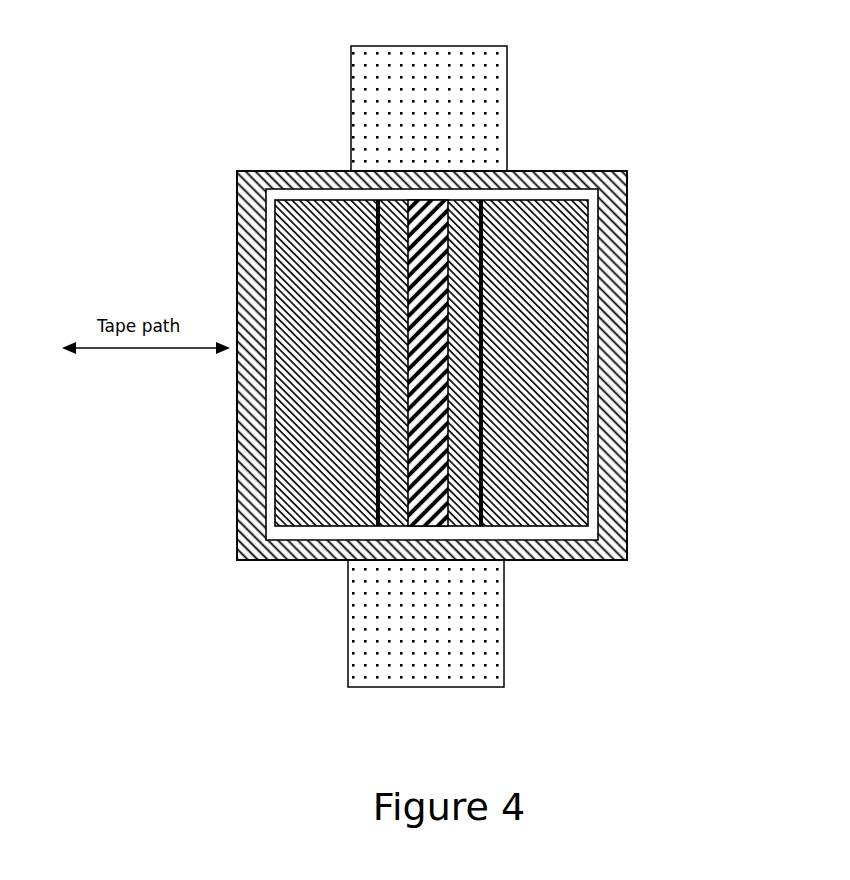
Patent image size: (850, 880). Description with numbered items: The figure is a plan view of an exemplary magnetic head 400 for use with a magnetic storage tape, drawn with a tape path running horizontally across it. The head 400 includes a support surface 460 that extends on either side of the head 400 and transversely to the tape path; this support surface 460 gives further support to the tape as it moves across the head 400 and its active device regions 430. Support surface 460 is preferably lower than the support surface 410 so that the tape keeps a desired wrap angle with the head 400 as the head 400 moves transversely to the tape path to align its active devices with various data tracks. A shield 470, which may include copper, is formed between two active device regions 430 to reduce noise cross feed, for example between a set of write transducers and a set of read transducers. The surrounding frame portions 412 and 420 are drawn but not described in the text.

The magnetic head 400 is at (467, 371).
The support surface 410 is at (545, 345).
The outer surface of housing 412 is at (615, 502).
The housing 420 is at (597, 465).
The active device regions 430 is at (378, 405).
The support surface 460 is at (442, 115).
The shield 470 is at (429, 485).